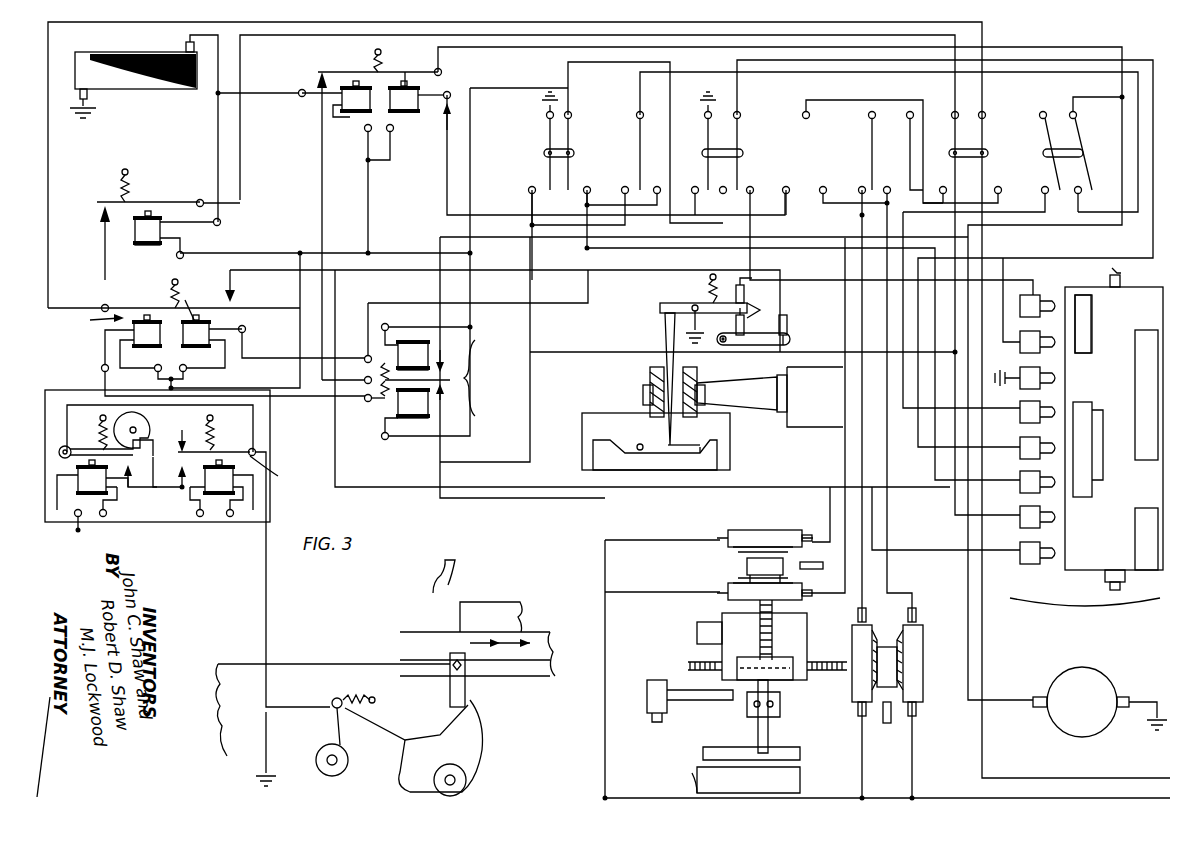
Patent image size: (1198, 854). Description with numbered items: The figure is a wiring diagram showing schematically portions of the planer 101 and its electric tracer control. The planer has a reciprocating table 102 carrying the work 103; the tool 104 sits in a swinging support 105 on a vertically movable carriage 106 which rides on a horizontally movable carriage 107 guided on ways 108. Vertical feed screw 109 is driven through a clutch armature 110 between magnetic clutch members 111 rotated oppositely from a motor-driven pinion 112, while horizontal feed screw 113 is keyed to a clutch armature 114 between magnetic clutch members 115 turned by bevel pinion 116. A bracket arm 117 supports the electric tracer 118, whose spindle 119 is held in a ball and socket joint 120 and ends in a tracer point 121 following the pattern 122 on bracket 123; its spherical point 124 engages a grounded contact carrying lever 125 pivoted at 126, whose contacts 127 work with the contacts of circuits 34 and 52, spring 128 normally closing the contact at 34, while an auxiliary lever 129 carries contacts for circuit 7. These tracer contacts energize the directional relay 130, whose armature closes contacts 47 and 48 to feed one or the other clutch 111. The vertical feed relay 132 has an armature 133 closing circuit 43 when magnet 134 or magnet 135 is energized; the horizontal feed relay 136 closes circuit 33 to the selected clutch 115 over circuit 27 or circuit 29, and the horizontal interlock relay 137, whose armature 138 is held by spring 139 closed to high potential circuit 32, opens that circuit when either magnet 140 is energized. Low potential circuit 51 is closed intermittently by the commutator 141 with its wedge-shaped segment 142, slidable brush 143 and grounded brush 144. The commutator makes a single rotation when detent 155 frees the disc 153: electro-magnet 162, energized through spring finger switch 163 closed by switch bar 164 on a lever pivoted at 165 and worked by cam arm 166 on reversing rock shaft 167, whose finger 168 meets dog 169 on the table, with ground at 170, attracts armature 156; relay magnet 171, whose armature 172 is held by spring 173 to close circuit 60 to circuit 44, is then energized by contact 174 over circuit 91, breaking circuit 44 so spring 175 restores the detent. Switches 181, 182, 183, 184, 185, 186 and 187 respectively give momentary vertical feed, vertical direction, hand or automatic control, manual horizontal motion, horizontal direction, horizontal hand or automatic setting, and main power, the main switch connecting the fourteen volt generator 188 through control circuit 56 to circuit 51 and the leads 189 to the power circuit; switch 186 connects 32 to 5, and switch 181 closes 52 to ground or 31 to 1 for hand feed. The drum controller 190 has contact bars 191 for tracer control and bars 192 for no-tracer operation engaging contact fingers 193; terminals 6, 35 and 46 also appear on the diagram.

The planer 101 is at (477, 677).
The reciprocating table 102 is at (550, 644).
The work 103 is at (523, 605).
The tool 104 is at (456, 564).
The swinging tool holder 105 is at (748, 710).
The vertically movable tool carriage 106 is at (805, 420).
The horizontally movable carriage 107 is at (725, 615).
The ways 108 is at (698, 632).
The vertical feed screw 109 is at (723, 657).
The clutch armature 110 is at (747, 565).
The magnetic clutch members 111 is at (745, 530).
The pinion 112 is at (788, 567).
The horizontal feed screw 113 is at (672, 670).
The magnetic clutch armature 114 is at (887, 640).
The magnetic clutch members 115 is at (857, 705).
The bevel pinion 116 is at (883, 724).
The bracket arm 117 is at (648, 393).
The electric tracer 118 is at (650, 373).
The tracer spindle 119 is at (695, 426).
The ball and socket joint 120 is at (660, 425).
The tracer point 121 is at (710, 460).
The pattern 122 is at (592, 455).
The pattern bracket 123 is at (582, 472).
The spherical point 124 is at (665, 318).
The contact carrying lever 125 is at (660, 307).
The pivot 126 is at (687, 305).
The contacts 127 is at (776, 308).
The spring 128 is at (697, 288).
The auxiliary lever 129 is at (752, 346).
The directional relay 130 is at (436, 357).
The vertical feed relay 132 is at (445, 127).
The armature 133 is at (356, 72).
The magnet 134 is at (334, 114).
The magnet 135 is at (407, 74).
The horizontal feed relay 136 is at (120, 236).
The horizontal interlock relay 137 is at (88, 322).
The armature 138 is at (236, 300).
The spring 139 is at (168, 290).
The magnet 140 is at (137, 333).
The commutator 141 is at (195, 70).
The wedge-shaped commutator segment 142 is at (140, 78).
The contact brush 143 is at (185, 48).
The second contact brush 144 is at (80, 102).
The disc 153 is at (150, 424).
The detent 155 is at (120, 463).
The armature 156 is at (62, 452).
The electro-magnet 162 is at (78, 530).
The spring finger switch 163 is at (320, 664).
The switch closing bar 164 is at (340, 693).
The pivot 165 is at (328, 775).
The cam arm 166 is at (402, 739).
The planer reversing rock shaft 167 is at (440, 795).
The finger 168 is at (478, 743).
The adjustable dog 169 is at (450, 690).
The ground 170 is at (231, 726).
The relay magnet 171 is at (218, 518).
The armature 172 is at (281, 468).
The spring 173 is at (214, 440).
The contact 174 is at (138, 498).
The spring 175 is at (102, 437).
The switch 181 is at (545, 141).
The switch 182 is at (638, 158).
The switch 183 is at (738, 133).
The switch 184 is at (810, 158).
The switch 185 is at (870, 155).
The switch 186 is at (980, 128).
The main switch 187 is at (1078, 128).
The generator 188 is at (1055, 722).
The leads 189 is at (1043, 780).
The drum controller 190 is at (1086, 460).
The contact bars 191 is at (1080, 298).
The contact bars 192 is at (1140, 323).
The contact fingers 193 is at (1028, 298).
The circuit 1 is at (707, 180).
The circuit 5 is at (966, 185).
The terminal 6 is at (941, 185).
The circuit 7 is at (779, 293).
The circuit 27 is at (825, 397).
The circuit 29 is at (874, 397).
The circuit 31 is at (647, 330).
The circuit 32 is at (696, 419).
The circuit 33 is at (210, 199).
The circuit 34 is at (895, 297).
The terminal 35 is at (901, 305).
The circuit 43 is at (316, 81).
The circuit 44 is at (156, 481).
The terminal 46 is at (1061, 134).
The contact 47 is at (631, 480).
The contact 48 is at (631, 461).
The low potential circuit 51 is at (542, 307).
The circuit 52 is at (438, 290).
The low voltage control circuit 56 is at (1039, 180).
The circuit 60 is at (203, 585).
The circuit 91 is at (164, 494).